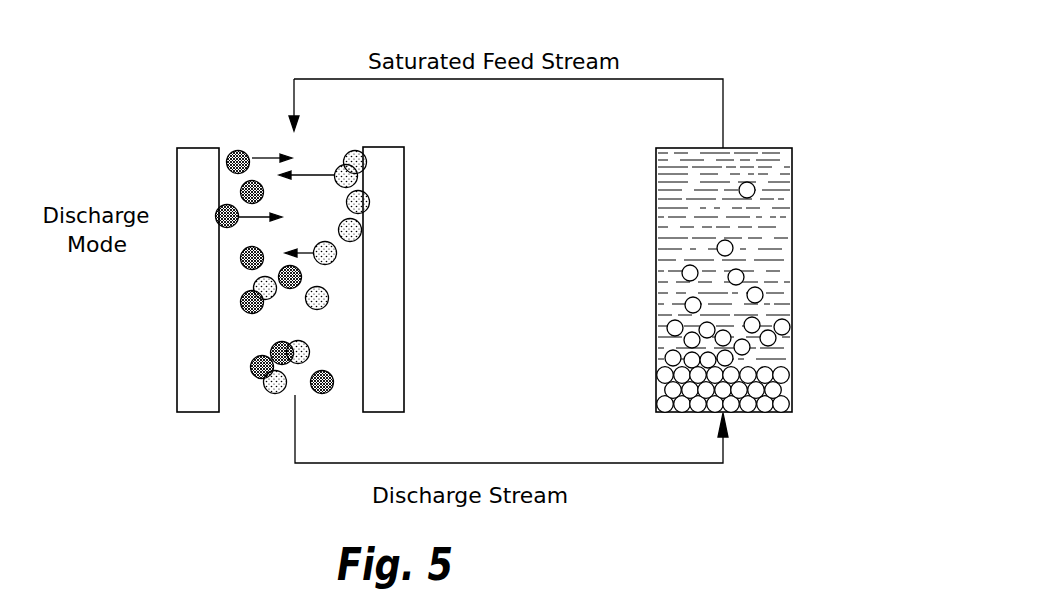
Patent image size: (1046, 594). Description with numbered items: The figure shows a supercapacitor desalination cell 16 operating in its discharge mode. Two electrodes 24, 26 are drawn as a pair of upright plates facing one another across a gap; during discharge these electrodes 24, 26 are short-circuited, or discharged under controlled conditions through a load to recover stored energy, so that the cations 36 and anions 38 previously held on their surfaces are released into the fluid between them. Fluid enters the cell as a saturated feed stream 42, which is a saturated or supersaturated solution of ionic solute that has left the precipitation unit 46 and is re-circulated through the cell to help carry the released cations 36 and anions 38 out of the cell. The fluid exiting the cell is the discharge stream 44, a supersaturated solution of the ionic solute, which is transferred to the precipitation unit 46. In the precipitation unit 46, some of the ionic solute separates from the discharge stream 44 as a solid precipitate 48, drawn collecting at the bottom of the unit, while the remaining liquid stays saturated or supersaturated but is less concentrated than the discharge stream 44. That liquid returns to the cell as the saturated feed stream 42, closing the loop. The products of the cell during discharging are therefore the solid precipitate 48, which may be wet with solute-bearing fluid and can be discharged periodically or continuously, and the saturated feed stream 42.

The supercapacitor desalination cell 16 is at (754, 223).
The electrode 24 is at (404, 193).
The electrode 26 is at (177, 331).
The cations 36 is at (278, 394).
The anions 38 is at (253, 377).
The saturated feed stream 42 is at (285, 92).
The discharge stream 44 is at (315, 463).
The precipitation unit 46 is at (793, 202).
The solid precipitate 48 is at (788, 375).